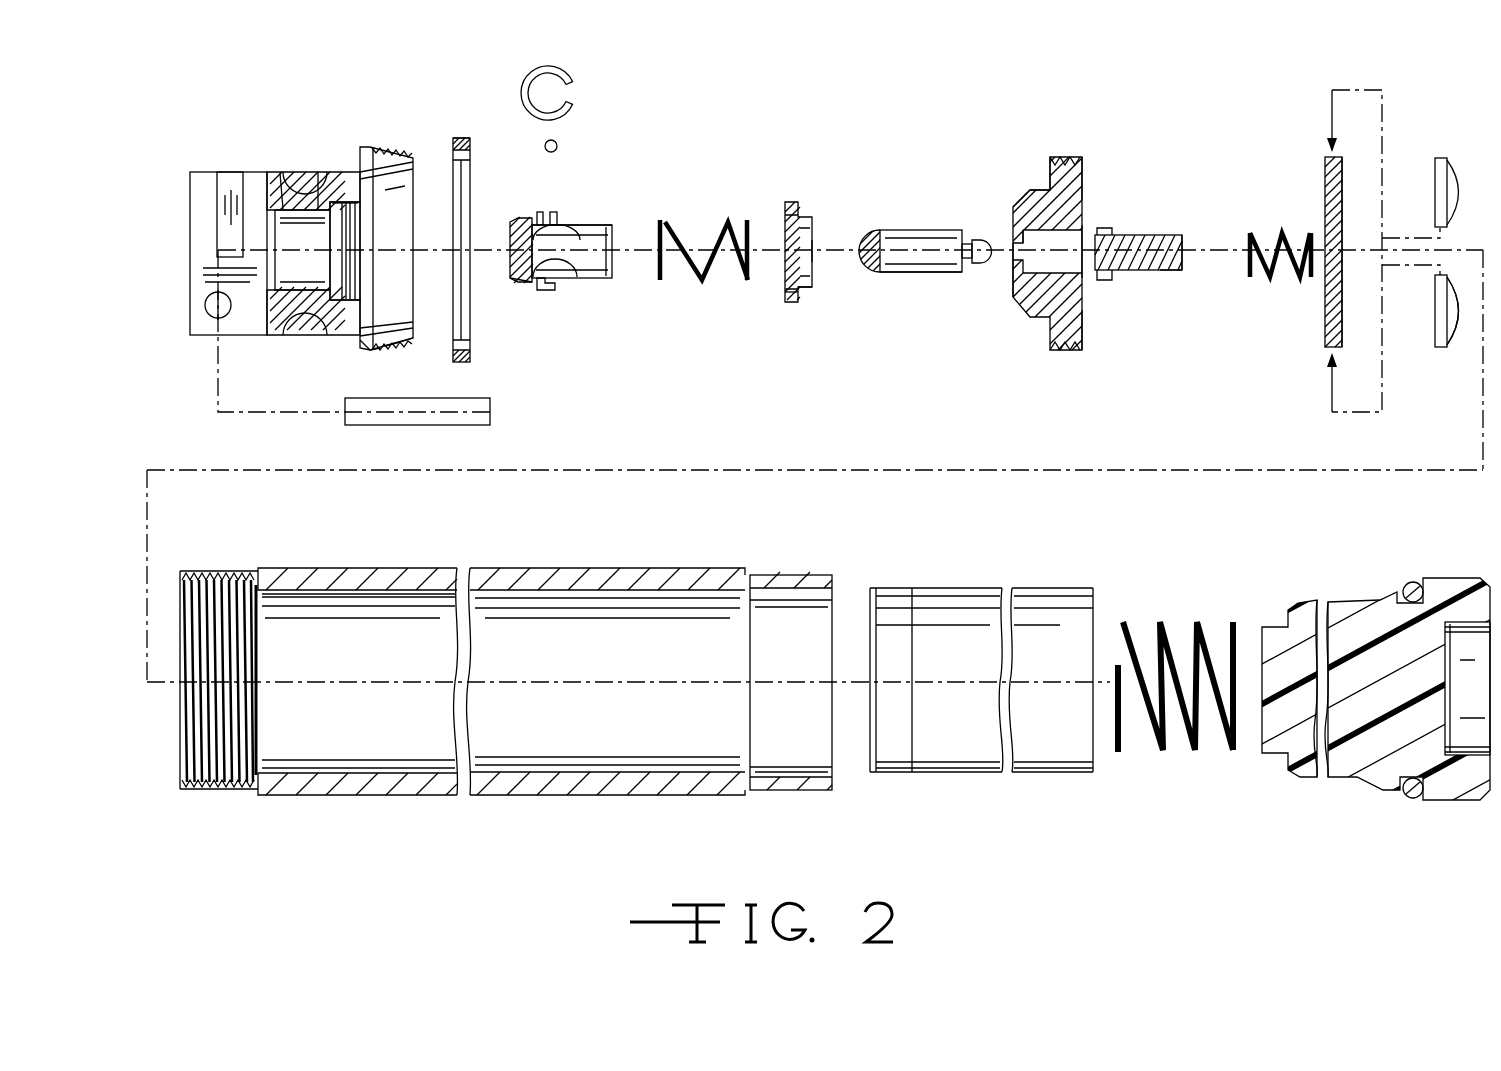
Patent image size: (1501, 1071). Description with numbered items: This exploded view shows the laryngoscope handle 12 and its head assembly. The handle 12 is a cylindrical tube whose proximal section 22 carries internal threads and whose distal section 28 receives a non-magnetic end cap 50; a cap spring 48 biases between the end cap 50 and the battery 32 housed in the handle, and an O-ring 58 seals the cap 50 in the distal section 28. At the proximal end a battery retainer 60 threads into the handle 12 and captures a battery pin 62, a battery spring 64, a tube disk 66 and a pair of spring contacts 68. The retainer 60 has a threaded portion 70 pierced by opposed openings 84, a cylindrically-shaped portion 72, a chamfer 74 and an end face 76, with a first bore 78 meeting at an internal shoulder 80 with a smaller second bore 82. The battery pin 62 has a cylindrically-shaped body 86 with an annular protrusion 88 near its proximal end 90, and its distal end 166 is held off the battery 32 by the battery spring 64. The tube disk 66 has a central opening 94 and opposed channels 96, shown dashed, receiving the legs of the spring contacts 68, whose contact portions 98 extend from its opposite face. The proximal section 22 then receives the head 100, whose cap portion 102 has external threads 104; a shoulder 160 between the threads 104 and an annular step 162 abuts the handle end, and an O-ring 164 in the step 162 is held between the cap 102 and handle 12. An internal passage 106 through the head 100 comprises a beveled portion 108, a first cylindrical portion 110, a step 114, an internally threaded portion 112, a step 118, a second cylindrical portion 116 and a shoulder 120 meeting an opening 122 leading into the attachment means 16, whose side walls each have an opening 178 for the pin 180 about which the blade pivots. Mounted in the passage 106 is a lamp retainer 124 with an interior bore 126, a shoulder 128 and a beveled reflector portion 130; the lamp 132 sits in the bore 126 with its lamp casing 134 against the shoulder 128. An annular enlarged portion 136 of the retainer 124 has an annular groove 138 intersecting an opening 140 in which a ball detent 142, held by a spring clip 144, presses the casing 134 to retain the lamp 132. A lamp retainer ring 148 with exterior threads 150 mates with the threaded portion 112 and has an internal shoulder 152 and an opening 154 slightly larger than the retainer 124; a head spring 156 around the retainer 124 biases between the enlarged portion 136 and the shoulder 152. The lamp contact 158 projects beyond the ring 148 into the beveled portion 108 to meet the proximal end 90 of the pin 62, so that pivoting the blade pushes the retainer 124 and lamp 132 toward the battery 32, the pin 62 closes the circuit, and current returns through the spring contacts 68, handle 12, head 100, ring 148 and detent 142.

The handle 12 is at (575, 568).
The attachment means 16 is at (226, 346).
The proximal section 22 is at (280, 572).
The distal section 28 is at (778, 575).
The battery 32 is at (960, 588).
The cap spring 48 is at (1160, 627).
The end cap 50 is at (1312, 605).
The O-ring 58 is at (1413, 582).
The battery retainer 60 is at (1040, 305).
The battery pin 62 is at (1140, 271).
The battery spring 64 is at (1255, 240).
The tube disk 66 is at (1345, 350).
The spring contacts 68 is at (1440, 158).
The threaded portion 70 is at (1056, 157).
The cylindrically-shaped portion 72 is at (1043, 190).
The chamfer 74 is at (1013, 212).
The end face 76 is at (1020, 228).
The first cylindrically-shaped bore 78 is at (1083, 225).
The internal shoulder 80 is at (1012, 245).
The second cylindrically-shaped bore 82 is at (1013, 280).
The openings 84 is at (1082, 168).
The cylindrically-shaped body 86 is at (1175, 236).
The annular protrusion 88 is at (1100, 230).
The proximal end 90 is at (1103, 281).
The central opening 94 is at (1345, 230).
The channels 96 is at (1325, 172).
The contact portion 98 is at (1459, 300).
The head 100 is at (330, 335).
The cap portion 102 is at (362, 355).
The external threads 104 is at (408, 345).
The internal passage 106 is at (404, 213).
The beveled portion 108 is at (375, 324).
The first cylindrical portion 110 is at (352, 305).
The internally threaded portion 112 is at (340, 168).
The step 114 is at (405, 165).
The second cylindrical portion 116 is at (283, 175).
The step 118 is at (318, 200).
The shoulder 120 is at (268, 200).
The opening 122 is at (241, 172).
The lamp retainer 124 is at (600, 285).
The interior cylindrically-shaped bore 126 is at (612, 230).
The shoulder 128 is at (575, 278).
The reflector portion 130 is at (510, 272).
The lamp 132 is at (870, 232).
The lamp casing 134 is at (910, 273).
The annular enlarged portion 136 is at (545, 210).
The annular groove 138 is at (548, 291).
The opening 140 is at (560, 228).
The detent 142 is at (556, 142).
The spring clip 144 is at (572, 76).
The lamp retainer ring 148 is at (800, 302).
The exterior threads 150 is at (795, 204).
The internal shoulder 152 is at (786, 286).
The opening 154 is at (813, 288).
The head spring 156 is at (695, 236).
The contact 158 is at (975, 263).
The shoulder 160 is at (395, 350).
The annular step 162 is at (376, 352).
The O-ring 164 is at (468, 140).
The distal end 166 is at (1183, 264).
The opening 178 is at (205, 305).
The pin 180 is at (490, 420).